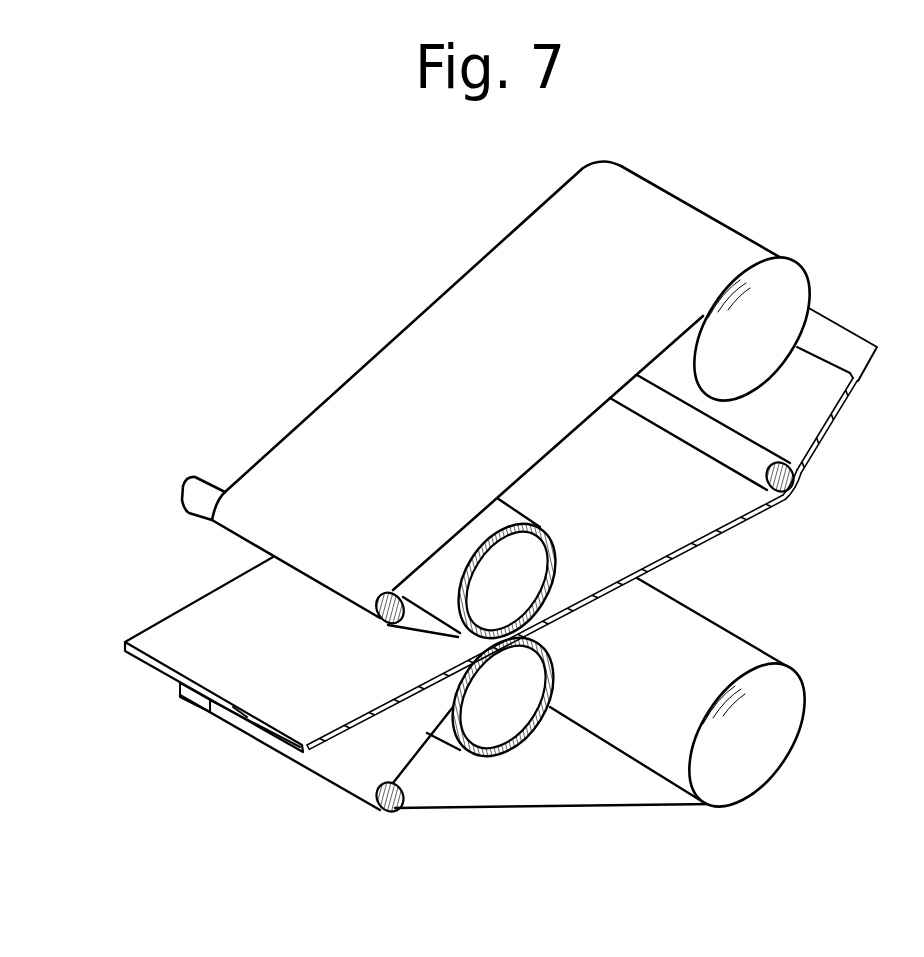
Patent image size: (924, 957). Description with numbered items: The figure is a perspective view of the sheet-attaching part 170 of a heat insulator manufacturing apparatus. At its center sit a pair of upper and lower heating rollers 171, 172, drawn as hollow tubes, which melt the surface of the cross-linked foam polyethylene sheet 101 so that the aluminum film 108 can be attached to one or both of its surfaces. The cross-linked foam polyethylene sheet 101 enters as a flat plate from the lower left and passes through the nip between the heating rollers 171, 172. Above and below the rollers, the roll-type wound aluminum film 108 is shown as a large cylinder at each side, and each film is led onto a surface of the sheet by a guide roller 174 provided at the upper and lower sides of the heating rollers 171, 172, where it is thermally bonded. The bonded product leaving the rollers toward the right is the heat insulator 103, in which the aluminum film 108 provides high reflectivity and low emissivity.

The sheet-attaching part 170 is at (332, 337).
The aluminum film 108 is at (793, 280).
The guide roller 174 is at (195, 494).
The upper heating roller 171 is at (548, 530).
The lower heating roller 172 is at (540, 760).
The heat insulator 103 is at (743, 520).
The cross-linked foam polyethylene sheet 101 is at (165, 647).